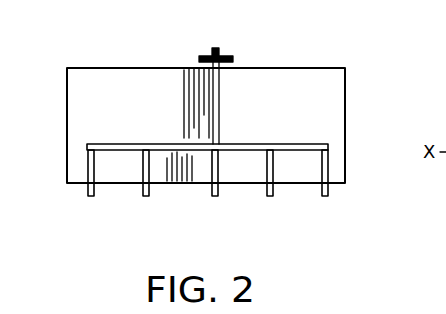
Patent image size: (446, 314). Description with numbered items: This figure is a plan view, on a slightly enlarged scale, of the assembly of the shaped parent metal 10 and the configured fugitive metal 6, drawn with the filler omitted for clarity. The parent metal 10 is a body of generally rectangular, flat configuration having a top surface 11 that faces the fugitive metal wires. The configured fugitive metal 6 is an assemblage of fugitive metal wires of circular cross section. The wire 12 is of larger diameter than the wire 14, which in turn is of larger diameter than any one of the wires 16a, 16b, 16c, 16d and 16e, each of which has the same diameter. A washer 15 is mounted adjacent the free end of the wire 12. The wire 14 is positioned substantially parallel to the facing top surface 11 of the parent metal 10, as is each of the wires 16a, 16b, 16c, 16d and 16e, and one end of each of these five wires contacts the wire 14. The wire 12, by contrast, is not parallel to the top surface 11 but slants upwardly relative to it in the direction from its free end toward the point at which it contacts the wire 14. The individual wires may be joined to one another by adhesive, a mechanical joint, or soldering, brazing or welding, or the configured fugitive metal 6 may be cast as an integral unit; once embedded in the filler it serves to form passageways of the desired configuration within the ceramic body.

The configured fugitive metal 6 is at (229, 143).
The parent metal 10 is at (242, 130).
The top surface 11 is at (276, 120).
The wire 12 is at (212, 93).
The wire 14 is at (167, 143).
The washer 15 is at (203, 55).
The wire 16a is at (87, 172).
The wire 16b is at (142, 172).
The wire 16c is at (211, 172).
The wire 16d is at (266, 172).
The wire 16e is at (321, 172).